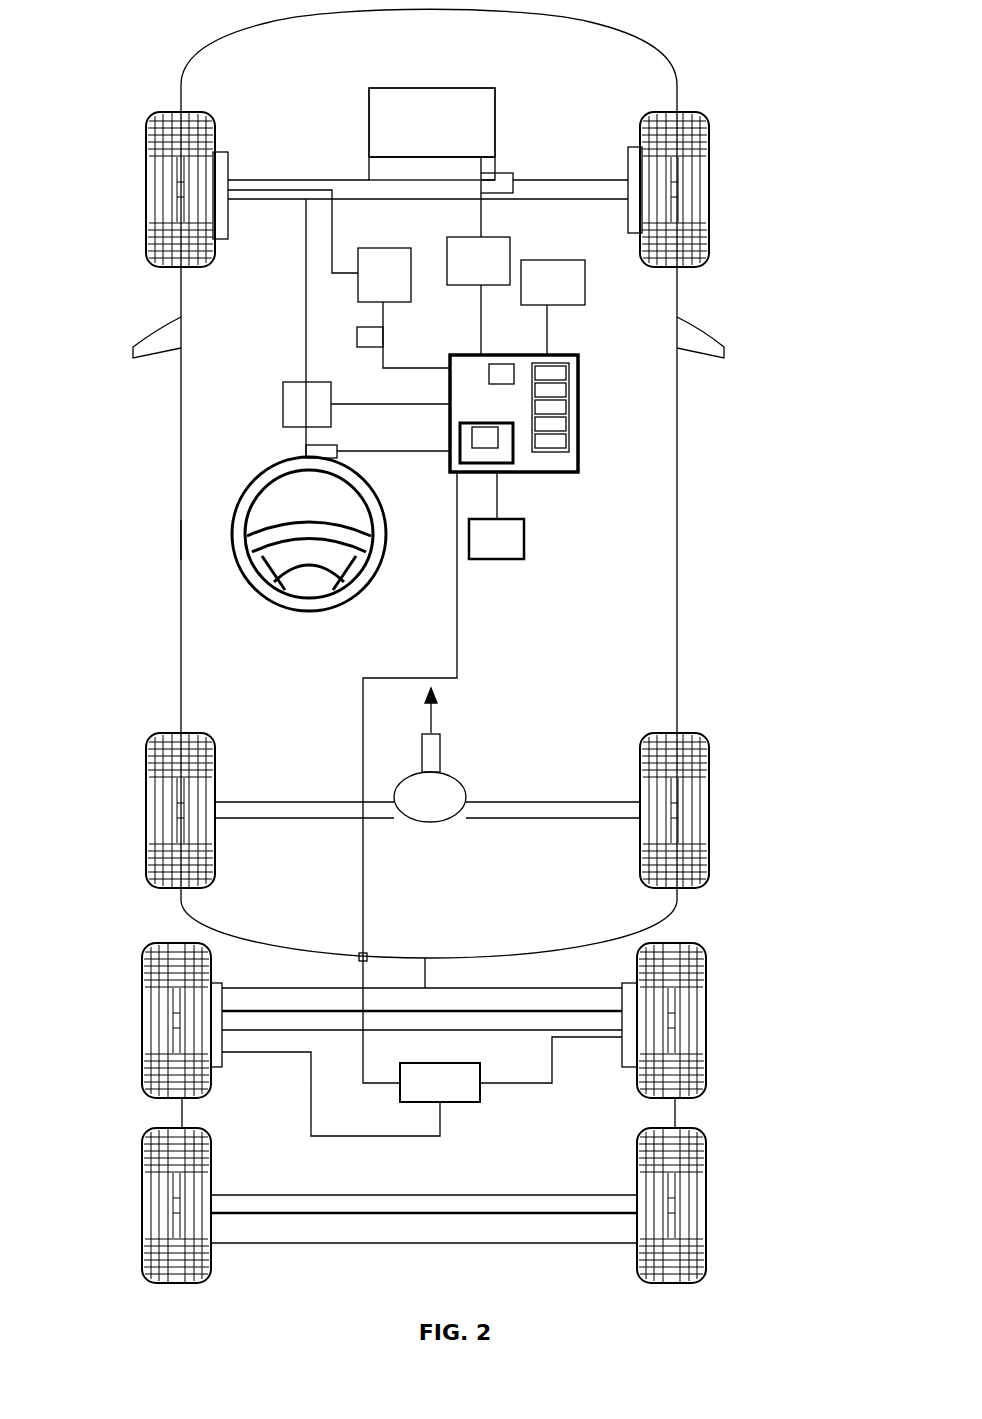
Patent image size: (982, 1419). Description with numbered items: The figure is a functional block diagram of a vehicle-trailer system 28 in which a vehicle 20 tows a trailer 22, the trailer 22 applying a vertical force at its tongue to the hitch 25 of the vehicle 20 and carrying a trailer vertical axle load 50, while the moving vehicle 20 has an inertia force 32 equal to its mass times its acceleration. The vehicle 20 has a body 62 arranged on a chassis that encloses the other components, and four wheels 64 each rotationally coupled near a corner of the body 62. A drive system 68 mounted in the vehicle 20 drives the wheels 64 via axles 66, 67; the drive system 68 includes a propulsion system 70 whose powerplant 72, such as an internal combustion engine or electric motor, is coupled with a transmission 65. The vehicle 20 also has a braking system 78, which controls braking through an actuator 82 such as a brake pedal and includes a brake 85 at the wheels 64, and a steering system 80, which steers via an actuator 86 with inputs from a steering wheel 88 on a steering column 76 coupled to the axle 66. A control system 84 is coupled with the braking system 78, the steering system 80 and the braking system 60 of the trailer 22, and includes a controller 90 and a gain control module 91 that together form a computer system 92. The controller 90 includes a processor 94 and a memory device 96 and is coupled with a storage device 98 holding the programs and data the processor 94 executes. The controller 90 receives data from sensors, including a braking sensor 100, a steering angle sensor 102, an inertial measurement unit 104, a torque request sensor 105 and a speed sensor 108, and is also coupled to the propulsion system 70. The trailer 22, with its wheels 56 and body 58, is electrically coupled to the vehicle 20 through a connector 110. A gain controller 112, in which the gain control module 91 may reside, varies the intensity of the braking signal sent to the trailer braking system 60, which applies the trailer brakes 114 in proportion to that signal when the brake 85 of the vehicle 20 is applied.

The vehicle 20 is at (642, 32).
The trailer 22 is at (720, 960).
The hitch 25 is at (432, 972).
The vehicle-trailer system 28 is at (730, 493).
The inertia force 32 is at (519, 604).
The trailer vertical axle load 50 is at (278, 280).
The wheels 56 is at (142, 1015).
The body 58 is at (676, 1112).
The braking system 60 is at (480, 1130).
The body 62 is at (180, 545).
The wheels 64 is at (146, 190).
The transmission 65 is at (369, 170).
The axle 66 is at (566, 180).
The axle 67 is at (545, 802).
The drive system 68 is at (310, 135).
The propulsion system 70 is at (366, 101).
The powerplant 72 is at (432, 122).
The steering column 76 is at (305, 305).
The braking system 78 is at (336, 320).
The steering system 80 is at (392, 617).
The actuator 82 is at (339, 279).
The control system 84 is at (557, 594).
The brake 85 is at (226, 150).
The actuator 86 is at (283, 410).
The steering wheel 88 is at (258, 595).
The controller 90 is at (514, 413).
The gain control module 91 is at (460, 455).
The computer system 92 is at (583, 362).
The processor 94 is at (501, 364).
The memory device 96 is at (550, 453).
The storage device 98 is at (472, 540).
The braking sensor 100 is at (372, 348).
The steering angle sensor 102 is at (306, 452).
The inertial measurement unit 104 is at (553, 307).
The torque request sensor 105 is at (478, 256).
The speed sensor 108 is at (513, 175).
The connector 110 is at (358, 957).
The gain controller 112 is at (478, 442).
The brakes 114 is at (222, 1062).